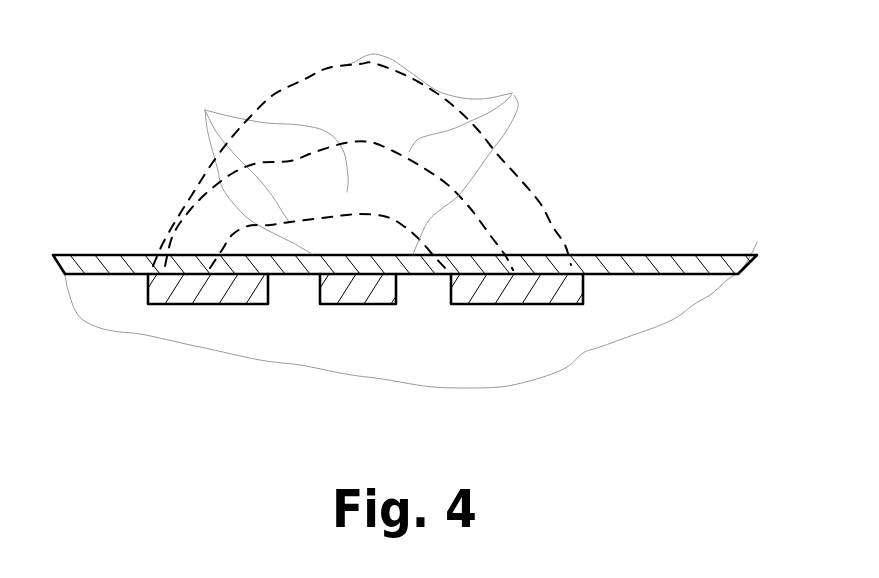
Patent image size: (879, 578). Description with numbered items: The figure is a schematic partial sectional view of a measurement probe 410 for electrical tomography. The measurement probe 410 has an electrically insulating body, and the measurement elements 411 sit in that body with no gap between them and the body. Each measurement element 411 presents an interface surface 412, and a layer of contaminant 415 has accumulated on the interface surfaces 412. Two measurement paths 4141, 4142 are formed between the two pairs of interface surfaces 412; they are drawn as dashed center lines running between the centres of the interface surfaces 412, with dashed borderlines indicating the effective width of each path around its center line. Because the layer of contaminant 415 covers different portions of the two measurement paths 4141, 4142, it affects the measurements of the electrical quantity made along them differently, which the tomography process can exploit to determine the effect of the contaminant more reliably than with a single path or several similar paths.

The measurement probe 410 is at (753, 160).
The measurement elements 411 is at (567, 288).
The interface surfaces 412 is at (545, 270).
The layer of contaminant 415 is at (120, 267).
The first measurement path 4141 is at (330, 163).
The second measurement path 4142 is at (375, 148).